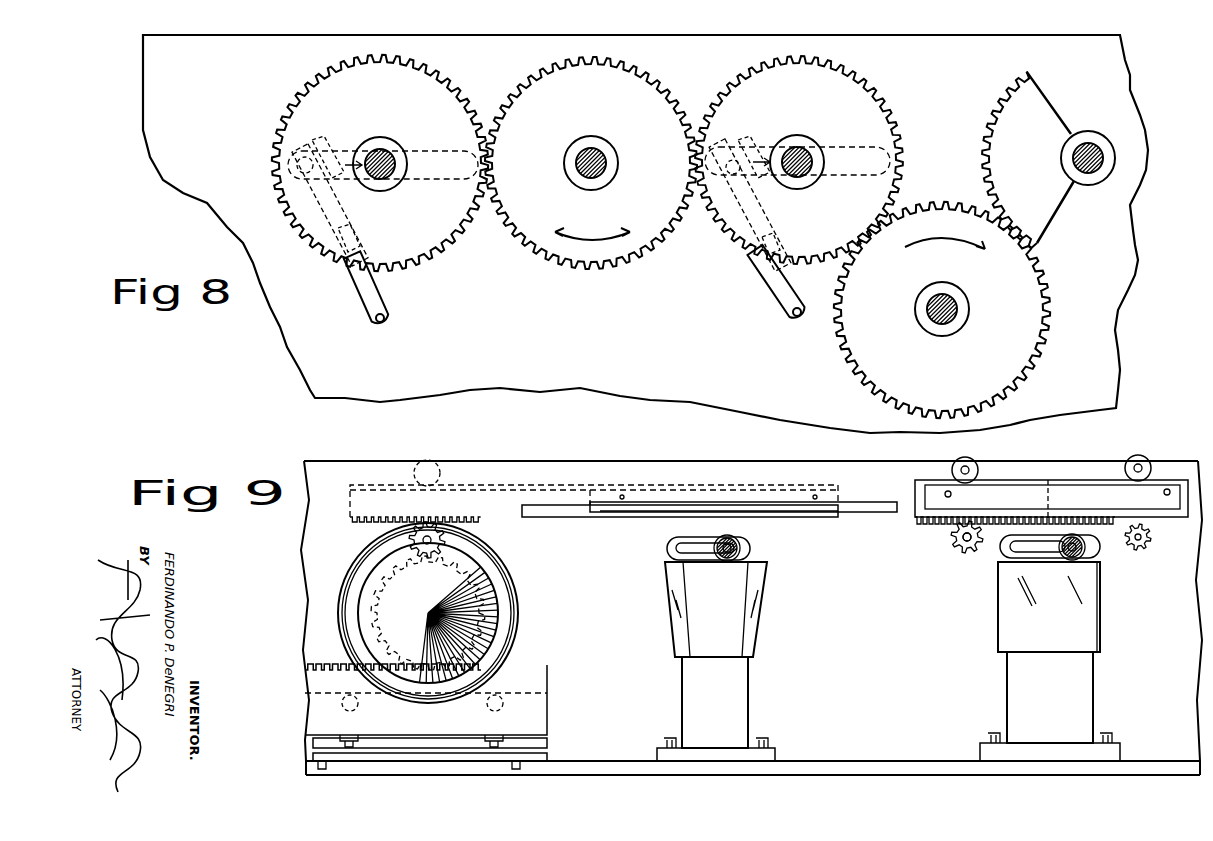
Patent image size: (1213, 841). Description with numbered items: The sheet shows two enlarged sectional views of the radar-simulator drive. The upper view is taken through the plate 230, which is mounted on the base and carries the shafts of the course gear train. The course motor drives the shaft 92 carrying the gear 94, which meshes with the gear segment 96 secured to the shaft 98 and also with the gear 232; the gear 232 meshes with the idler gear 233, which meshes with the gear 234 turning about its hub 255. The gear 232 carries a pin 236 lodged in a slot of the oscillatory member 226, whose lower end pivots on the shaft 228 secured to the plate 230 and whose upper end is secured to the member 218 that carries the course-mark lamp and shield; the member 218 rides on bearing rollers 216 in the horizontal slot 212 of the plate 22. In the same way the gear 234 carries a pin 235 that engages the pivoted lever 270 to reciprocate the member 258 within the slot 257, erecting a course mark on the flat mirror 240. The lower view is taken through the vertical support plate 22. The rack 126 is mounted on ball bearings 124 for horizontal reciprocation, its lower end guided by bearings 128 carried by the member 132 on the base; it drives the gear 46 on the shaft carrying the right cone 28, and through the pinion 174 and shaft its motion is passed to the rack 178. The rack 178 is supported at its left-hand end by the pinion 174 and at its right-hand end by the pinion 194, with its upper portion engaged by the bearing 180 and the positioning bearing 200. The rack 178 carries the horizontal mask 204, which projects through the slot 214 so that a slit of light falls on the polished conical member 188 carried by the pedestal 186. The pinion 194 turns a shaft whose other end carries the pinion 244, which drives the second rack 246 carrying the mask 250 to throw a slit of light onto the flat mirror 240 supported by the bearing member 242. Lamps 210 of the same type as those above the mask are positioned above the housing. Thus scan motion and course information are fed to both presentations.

In FIG. 8, the plate 230 is at (1137, 252).
In FIG. 8, the gear 234 is at (440, 88).
In FIG. 8, the hub shaft 255 is at (392, 160).
In FIG. 8, the slot 257 is at (438, 190).
In FIG. 9, the slot 257 is at (1045, 558).
In FIG. 8, the member 258 is at (300, 168).
In FIG. 9, the member 258 is at (1092, 553).
In FIG. 8, the pin 235 is at (338, 268).
In FIG. 8, the pivoted lever 270 is at (392, 298).
In FIG. 8, the idler gear 233 is at (594, 272).
In FIG. 8, the gear 232 is at (890, 120).
In FIG. 8, the lamps 210 is at (797, 140).
In FIG. 8, the horizontal slot 212 is at (864, 183).
In FIG. 9, the horizontal slot 212 is at (682, 545).
In FIG. 8, the member 218 is at (724, 200).
In FIG. 8, the pin 236 is at (749, 262).
In FIG. 8, the oscillatory member 226 is at (774, 300).
In FIG. 8, the shaft 228 is at (797, 325).
In FIG. 8, the gear 94 is at (1055, 318).
In FIG. 8, the shaft 92 is at (960, 312).
In FIG. 8, the gear segment 96 is at (1048, 224).
In FIG. 8, the shaft 98 is at (1088, 145).
In FIG. 9, the vertical support plate 22 is at (307, 598).
In FIG. 9, the rack 178 is at (490, 487).
In FIG. 9, the bearing 180 is at (439, 482).
In FIG. 9, the pinion 174 is at (445, 540).
In FIG. 9, the right cone 28 is at (500, 618).
In FIG. 9, the gear 46 is at (368, 575).
In FIG. 9, the rack 126 is at (547, 710).
In FIG. 9, the ball bearings 124 is at (490, 709).
In FIG. 9, the bearings 128 is at (548, 742).
In FIG. 9, the member 132 is at (548, 759).
In FIG. 9, the horizontal mask 204 is at (832, 520).
In FIG. 9, the slot 214 is at (888, 515).
In FIG. 9, the bearing rollers 216 is at (743, 545).
In FIG. 9, the metal member 188 is at (760, 642).
In FIG. 9, the pedestal 186 is at (748, 706).
In FIG. 9, the positioning bearing 200 is at (1150, 456).
In FIG. 9, the second rack 246 is at (1190, 508).
In FIG. 9, the pinion 244 is at (960, 554).
In FIG. 9, the pinion 194 is at (970, 562).
In FIG. 9, the mask 250 is at (1155, 543).
In FIG. 9, the flat mirror 240 is at (1095, 619).
In FIG. 9, the bearing member 242 is at (1095, 702).